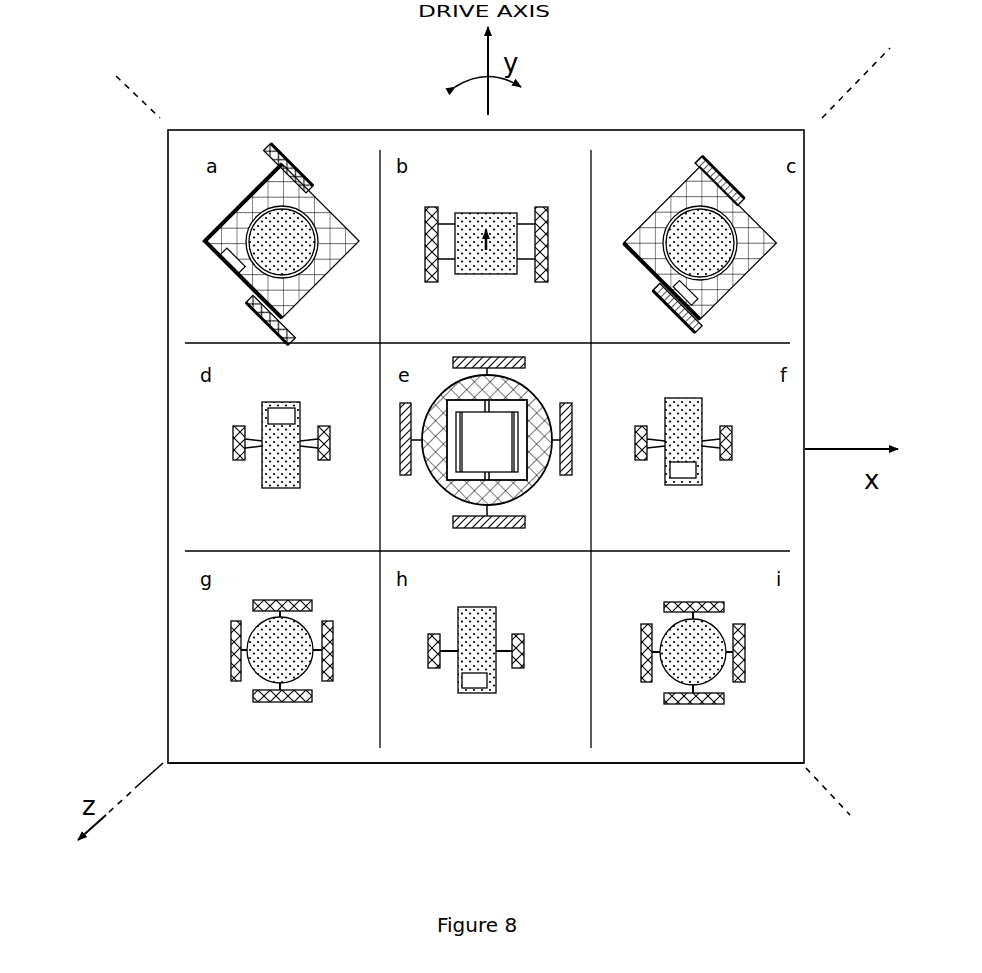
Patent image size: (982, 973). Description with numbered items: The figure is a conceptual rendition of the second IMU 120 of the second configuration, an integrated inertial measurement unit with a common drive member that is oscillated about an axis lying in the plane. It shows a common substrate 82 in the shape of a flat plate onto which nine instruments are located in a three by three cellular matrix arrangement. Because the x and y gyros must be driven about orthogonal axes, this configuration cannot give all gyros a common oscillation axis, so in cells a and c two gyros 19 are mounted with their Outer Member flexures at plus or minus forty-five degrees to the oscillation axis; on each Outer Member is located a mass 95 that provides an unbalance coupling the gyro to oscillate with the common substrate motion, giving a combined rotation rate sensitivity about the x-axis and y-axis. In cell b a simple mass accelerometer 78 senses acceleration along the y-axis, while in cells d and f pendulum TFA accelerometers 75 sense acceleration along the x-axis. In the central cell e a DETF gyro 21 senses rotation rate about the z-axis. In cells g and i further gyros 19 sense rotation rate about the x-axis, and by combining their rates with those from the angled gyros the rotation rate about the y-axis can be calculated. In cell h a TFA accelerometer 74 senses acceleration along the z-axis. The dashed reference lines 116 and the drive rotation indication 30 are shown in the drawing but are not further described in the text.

The first dashed reference axis line 116 is at (138, 105).
The second IMU 120 is at (775, 53).
The drive rotation about drive axis 30 is at (467, 71).
The simple mass accelerometer 78 is at (515, 190).
The gyro 19 is at (205, 282).
The mass 95 is at (245, 277).
The pendulum TFA accelerometer 75 is at (232, 484).
The DETF gyro 21 is at (555, 497).
The TFA accelerometer 74 is at (497, 713).
The common substrate 82 is at (652, 763).